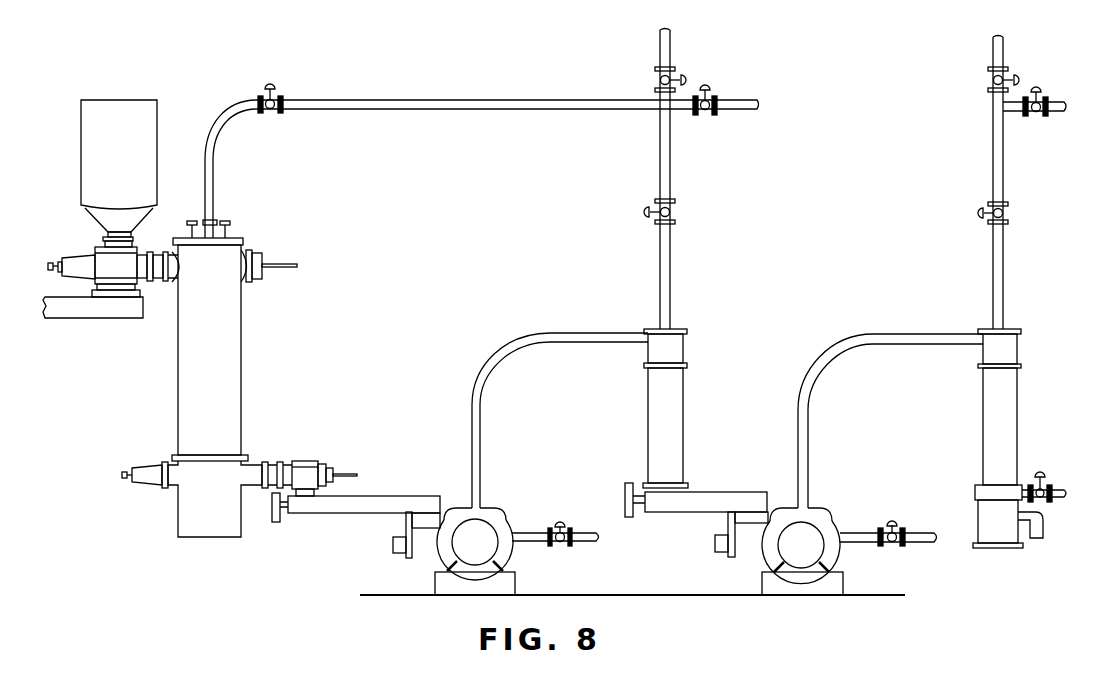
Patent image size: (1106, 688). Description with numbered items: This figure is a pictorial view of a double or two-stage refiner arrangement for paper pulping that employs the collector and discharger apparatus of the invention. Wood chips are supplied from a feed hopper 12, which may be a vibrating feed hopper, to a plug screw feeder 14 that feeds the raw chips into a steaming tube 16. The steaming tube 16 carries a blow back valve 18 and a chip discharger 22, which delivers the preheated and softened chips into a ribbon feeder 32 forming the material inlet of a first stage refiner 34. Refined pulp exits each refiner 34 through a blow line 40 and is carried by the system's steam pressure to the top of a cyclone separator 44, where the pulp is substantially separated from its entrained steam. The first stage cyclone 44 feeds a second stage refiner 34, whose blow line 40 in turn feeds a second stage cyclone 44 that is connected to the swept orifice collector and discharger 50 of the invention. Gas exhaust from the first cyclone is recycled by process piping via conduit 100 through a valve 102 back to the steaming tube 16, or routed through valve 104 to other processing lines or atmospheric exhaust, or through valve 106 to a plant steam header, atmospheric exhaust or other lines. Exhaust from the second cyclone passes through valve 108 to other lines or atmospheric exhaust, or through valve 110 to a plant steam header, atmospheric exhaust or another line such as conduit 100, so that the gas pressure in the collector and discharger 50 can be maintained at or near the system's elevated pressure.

The feed hopper 12 is at (82, 142).
The plug screw feeder 14 is at (72, 257).
The steaming tube 16 is at (243, 320).
The blow back valve 18 is at (256, 253).
The chip discharger 22 is at (148, 455).
The ribbon feeder 32 is at (362, 515).
The refiner 34 is at (498, 512).
The blow line 40 is at (592, 333).
The cyclone separator 44 is at (685, 413).
The swept orifice collector and discharger 50 is at (975, 492).
The conduit 100 is at (672, 160).
The valve 102 is at (276, 81).
The valve 104 is at (711, 86).
The valve 106 is at (685, 75).
The valve 108 is at (1036, 88).
The valve 110 is at (1020, 75).